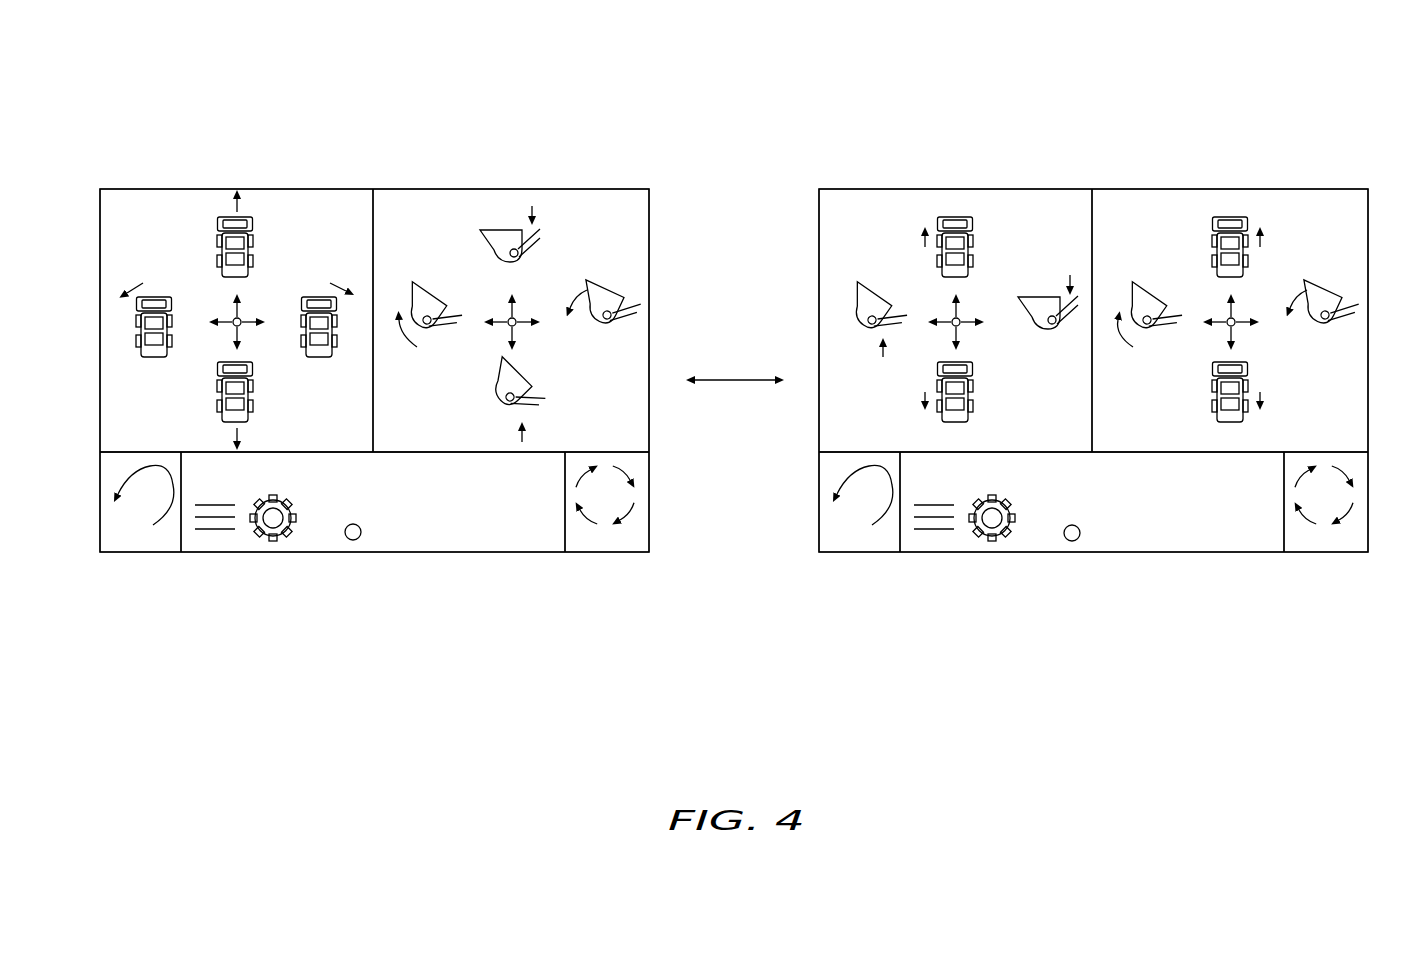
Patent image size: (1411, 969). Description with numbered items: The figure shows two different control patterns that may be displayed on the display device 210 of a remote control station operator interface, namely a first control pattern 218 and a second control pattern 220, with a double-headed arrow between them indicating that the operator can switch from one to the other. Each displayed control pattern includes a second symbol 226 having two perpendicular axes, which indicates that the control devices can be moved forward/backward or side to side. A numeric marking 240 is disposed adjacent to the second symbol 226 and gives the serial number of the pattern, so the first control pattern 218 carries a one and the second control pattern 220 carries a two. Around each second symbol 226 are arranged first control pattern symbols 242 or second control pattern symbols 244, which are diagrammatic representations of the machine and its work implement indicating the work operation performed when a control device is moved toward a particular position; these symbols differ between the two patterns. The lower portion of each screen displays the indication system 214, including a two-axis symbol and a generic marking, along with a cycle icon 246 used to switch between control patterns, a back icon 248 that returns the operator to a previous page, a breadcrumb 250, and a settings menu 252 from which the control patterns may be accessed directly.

The display device 210 is at (100, 262).
The indication system 214 is at (370, 540).
The first control pattern 218 is at (642, 226).
The second control pattern 220 is at (1360, 244).
The second symbol 226 is at (250, 318).
The numeric marking 240 is at (265, 343).
The first control pattern symbols 242 is at (223, 243).
The second control pattern symbols 244 is at (860, 297).
The cycle icon 246 is at (610, 540).
The back icon 248 is at (132, 508).
The breadcrumb 250 is at (215, 532).
The settings menu 252 is at (280, 540).